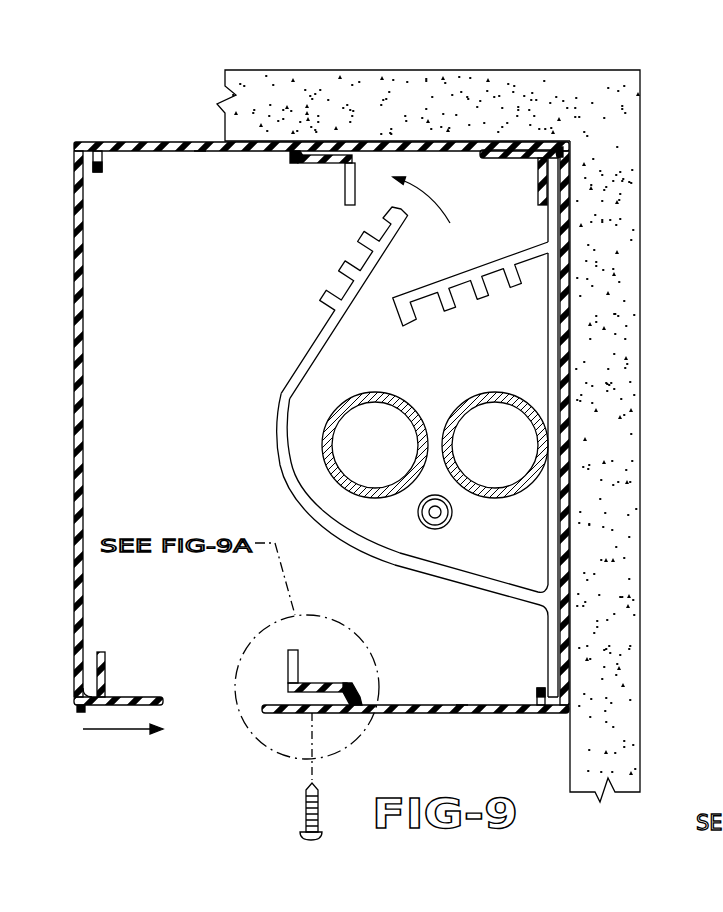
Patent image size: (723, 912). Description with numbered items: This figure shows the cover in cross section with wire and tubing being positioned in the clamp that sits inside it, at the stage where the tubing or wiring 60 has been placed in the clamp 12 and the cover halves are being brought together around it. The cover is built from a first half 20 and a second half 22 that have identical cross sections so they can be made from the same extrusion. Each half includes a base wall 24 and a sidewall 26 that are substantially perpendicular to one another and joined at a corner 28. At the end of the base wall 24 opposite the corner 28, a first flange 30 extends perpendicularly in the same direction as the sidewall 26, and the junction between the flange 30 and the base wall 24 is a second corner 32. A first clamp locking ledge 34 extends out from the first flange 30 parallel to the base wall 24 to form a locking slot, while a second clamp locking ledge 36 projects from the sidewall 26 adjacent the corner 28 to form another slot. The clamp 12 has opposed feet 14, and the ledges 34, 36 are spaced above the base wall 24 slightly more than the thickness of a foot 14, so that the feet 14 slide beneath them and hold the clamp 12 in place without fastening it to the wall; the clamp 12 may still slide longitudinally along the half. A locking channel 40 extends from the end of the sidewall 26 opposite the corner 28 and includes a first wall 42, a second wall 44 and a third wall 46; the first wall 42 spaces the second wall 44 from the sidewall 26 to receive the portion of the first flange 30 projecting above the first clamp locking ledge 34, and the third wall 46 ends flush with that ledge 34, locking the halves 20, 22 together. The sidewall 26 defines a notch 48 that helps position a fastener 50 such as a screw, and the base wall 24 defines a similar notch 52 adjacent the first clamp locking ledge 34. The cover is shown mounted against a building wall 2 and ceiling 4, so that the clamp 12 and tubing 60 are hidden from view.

The wall 2 is at (638, 400).
The ceiling 4 is at (300, 68).
The clamp 12 is at (280, 386).
The feet 14 is at (553, 198).
The first half 20 is at (445, 722).
The second half 22 is at (205, 140).
The base wall 24 is at (548, 335).
The sidewall 26 is at (200, 152).
The corner 28 is at (77, 144).
The first flange 30 is at (488, 160).
The second corner 32 is at (563, 150).
The first clamp locking ledge 34 is at (538, 192).
The second clamp locking ledge 36 is at (100, 162).
The locking channel 40 is at (310, 427).
The first wall 42 is at (296, 156).
The second wall 44 is at (308, 166).
The third wall 46 is at (346, 190).
The notch 48 is at (313, 715).
The fastener 50 is at (304, 803).
The notch 52 is at (77, 672).
The tubing or wiring 60 is at (405, 383).